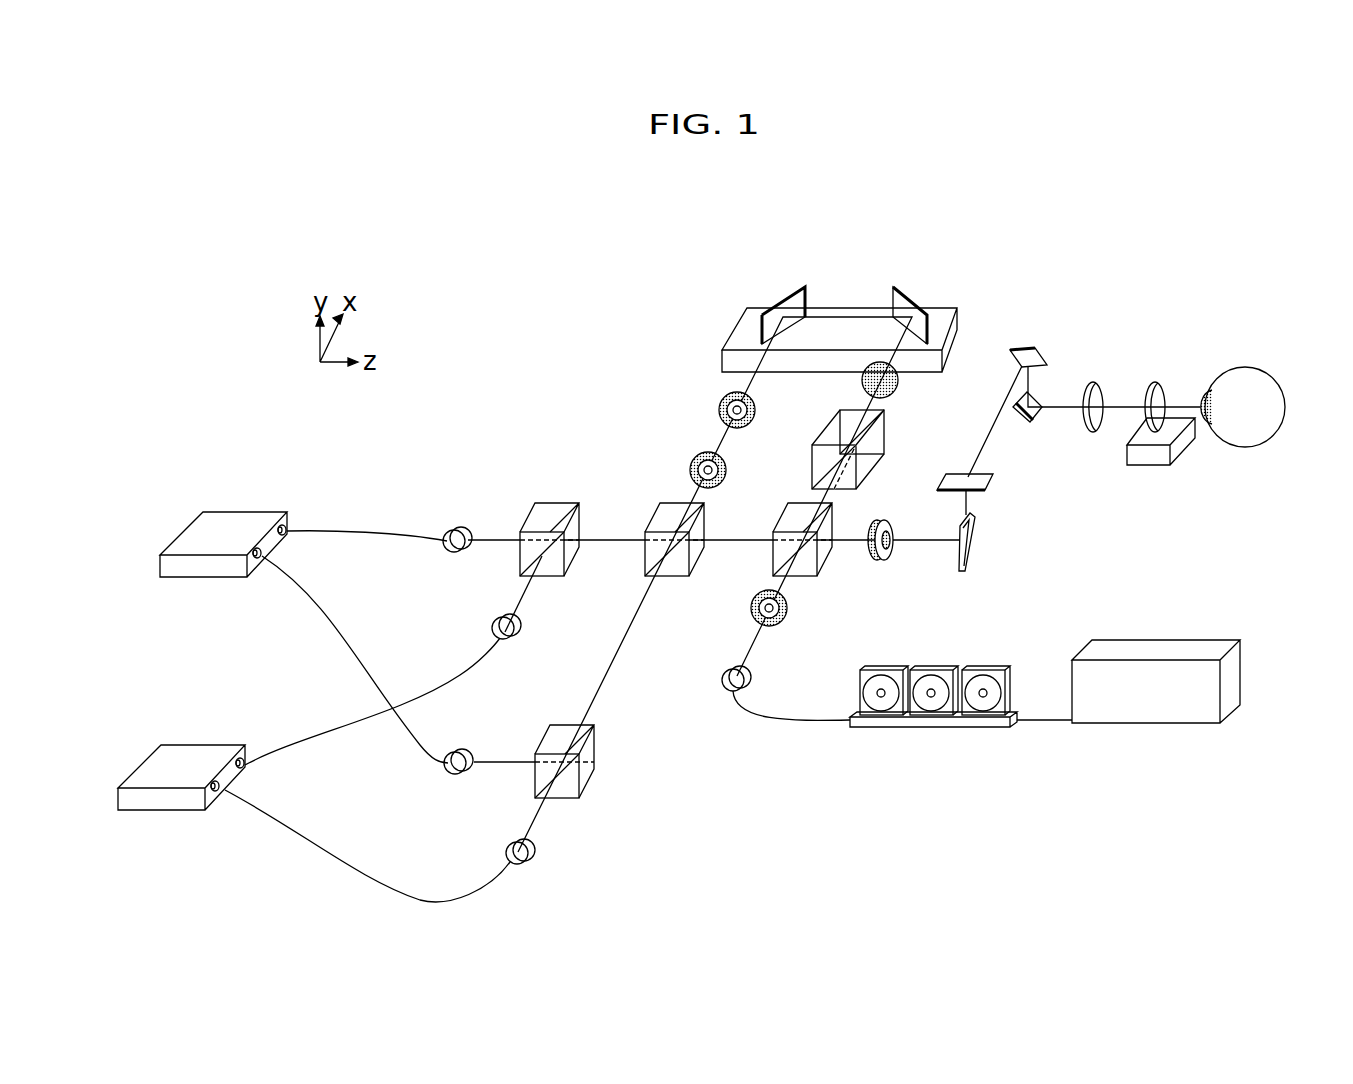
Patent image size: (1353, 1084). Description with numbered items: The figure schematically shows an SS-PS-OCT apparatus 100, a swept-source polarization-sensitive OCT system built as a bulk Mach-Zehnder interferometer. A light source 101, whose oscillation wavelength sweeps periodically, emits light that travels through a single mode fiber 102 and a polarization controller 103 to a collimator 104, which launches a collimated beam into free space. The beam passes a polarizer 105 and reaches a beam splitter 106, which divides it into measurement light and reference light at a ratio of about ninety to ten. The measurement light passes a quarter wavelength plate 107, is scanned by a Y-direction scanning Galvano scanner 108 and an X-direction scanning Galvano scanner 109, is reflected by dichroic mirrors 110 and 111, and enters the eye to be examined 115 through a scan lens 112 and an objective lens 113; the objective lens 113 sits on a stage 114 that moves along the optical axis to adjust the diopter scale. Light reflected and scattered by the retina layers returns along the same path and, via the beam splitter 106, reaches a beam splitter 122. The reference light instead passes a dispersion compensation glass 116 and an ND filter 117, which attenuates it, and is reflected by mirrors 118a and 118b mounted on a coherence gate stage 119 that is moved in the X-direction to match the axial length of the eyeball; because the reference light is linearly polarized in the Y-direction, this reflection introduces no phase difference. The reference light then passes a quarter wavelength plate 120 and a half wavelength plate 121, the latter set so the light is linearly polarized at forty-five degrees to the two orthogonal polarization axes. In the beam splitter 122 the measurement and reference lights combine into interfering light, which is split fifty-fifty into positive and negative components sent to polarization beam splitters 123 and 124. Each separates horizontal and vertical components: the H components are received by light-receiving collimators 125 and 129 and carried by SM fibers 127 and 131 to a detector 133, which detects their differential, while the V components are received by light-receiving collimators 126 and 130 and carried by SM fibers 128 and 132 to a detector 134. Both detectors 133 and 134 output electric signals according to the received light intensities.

The SS-PS-OCT apparatus 100 is at (266, 240).
The light source 101 is at (1145, 726).
The single mode fiber 102 is at (1037, 722).
The polarization controller 103 is at (927, 727).
The collimator 104 is at (748, 677).
The polarizer 105 is at (786, 622).
The beam splitter 106 is at (806, 575).
The 1/4 wavelength plate 107 is at (876, 562).
The Y-direction scanning Galvano scanner 108 is at (966, 568).
The X-direction scanning Galvano scanner 109 is at (948, 478).
The dichroic mirror 110 is at (1028, 348).
The dichroic mirror 111 is at (1032, 425).
The scan lens 112 is at (1092, 382).
The objective lens 113 is at (1155, 382).
The stage 114 is at (1152, 465).
The eye to be examined 115 is at (1232, 375).
The dispersion compensation glass 116 is at (862, 478).
The ND filter 117 is at (897, 393).
The mirror 118a is at (908, 297).
The mirror 118b is at (800, 293).
The coherence gate stage 119 is at (722, 360).
The 1/4 wavelength plate 120 is at (719, 410).
The 1/2 wavelength plate 121 is at (690, 470).
The beam splitter 122 is at (655, 505).
The polarization beam splitter 123 is at (532, 505).
The polarization beam splitter 124 is at (592, 752).
The light-receiving collimator 125 is at (447, 532).
The light-receiving collimator 126 is at (495, 625).
The SM fiber 127 is at (380, 530).
The SM fiber 128 is at (465, 665).
The light-receiving collimator 129 is at (460, 752).
The light-receiving collimator 130 is at (510, 850).
The SM fiber 131 is at (358, 645).
The SM fiber 132 is at (393, 885).
The detector 133 is at (233, 510).
The detector 134 is at (190, 745).